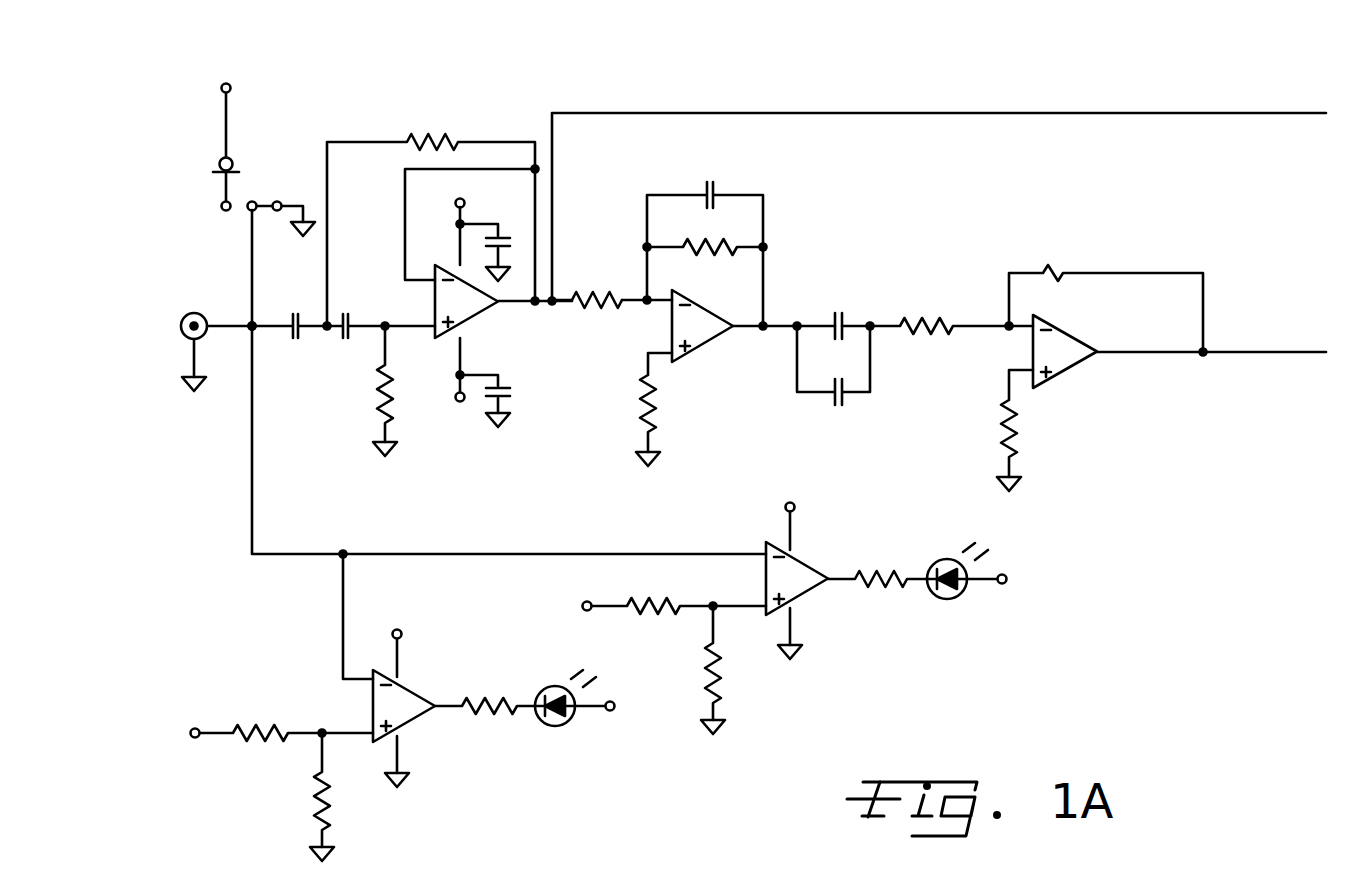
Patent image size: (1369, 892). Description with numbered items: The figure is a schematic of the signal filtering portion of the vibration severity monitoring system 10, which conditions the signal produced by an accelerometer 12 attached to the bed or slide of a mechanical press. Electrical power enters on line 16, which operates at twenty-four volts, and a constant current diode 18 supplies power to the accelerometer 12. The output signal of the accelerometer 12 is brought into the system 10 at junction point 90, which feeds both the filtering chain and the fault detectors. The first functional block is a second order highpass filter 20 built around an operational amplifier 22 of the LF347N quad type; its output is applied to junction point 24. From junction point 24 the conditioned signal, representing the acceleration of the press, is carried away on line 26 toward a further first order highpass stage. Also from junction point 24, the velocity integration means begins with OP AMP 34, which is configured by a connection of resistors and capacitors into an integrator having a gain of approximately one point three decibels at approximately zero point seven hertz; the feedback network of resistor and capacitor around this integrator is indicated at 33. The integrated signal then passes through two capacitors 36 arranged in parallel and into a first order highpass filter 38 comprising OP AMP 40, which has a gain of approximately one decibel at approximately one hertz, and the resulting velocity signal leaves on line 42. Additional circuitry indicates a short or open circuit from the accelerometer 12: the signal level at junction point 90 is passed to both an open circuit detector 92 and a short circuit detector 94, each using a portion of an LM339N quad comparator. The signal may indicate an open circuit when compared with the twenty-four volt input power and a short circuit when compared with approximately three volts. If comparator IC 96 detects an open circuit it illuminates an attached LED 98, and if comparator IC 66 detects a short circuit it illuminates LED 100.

The vibration severity monitoring system 10 is at (684, 440).
The accelerometer 12 is at (177, 333).
The line 16 is at (226, 124).
The constant current diode 18 is at (232, 163).
The second order highpass filter 20 is at (501, 331).
The operational amplifier 22 is at (435, 292).
The junction point 24 is at (548, 305).
The line 26 is at (838, 113).
The integrator feedback network 33 is at (628, 232).
The OP AMP 34 is at (703, 318).
The capacitors 36 is at (845, 318).
The first order highpass filter 38 is at (1169, 237).
The OP AMP 40 is at (1073, 345).
The line 42 is at (1265, 352).
The comparator IC 66 is at (803, 592).
The junction point 90 is at (256, 328).
The open circuit detector 92 is at (424, 731).
The short circuit detector 94 is at (823, 611).
The comparator IC 96 is at (415, 718).
The LED 98 is at (568, 726).
The LED 100 is at (958, 598).